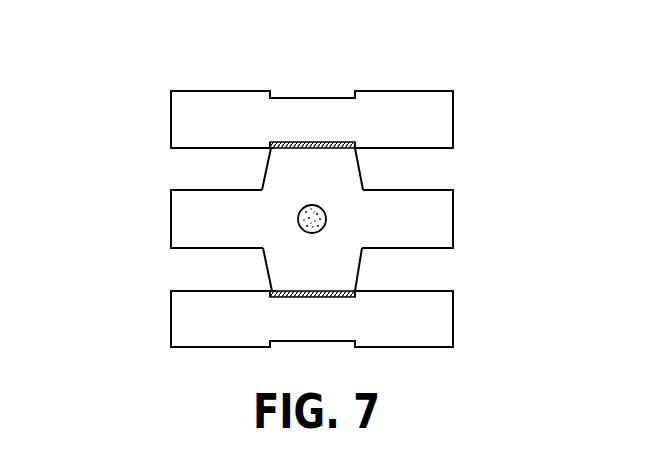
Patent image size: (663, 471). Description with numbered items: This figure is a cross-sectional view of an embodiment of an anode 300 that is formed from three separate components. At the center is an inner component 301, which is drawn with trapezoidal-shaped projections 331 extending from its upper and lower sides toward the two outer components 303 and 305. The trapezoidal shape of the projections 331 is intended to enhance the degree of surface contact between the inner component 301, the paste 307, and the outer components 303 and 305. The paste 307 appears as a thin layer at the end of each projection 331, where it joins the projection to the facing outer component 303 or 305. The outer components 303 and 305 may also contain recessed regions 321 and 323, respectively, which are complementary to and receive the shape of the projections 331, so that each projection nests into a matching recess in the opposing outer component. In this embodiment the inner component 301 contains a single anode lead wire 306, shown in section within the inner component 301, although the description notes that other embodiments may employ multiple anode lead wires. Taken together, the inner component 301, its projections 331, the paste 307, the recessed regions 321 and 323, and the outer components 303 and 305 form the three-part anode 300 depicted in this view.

The anode 300 is at (104, 164).
The inner component 301 is at (450, 217).
The outer component 303 is at (450, 118).
The outer component 305 is at (450, 313).
The anode lead wire 306 is at (312, 233).
The paste 307 is at (310, 142).
The recessed region 321 is at (258, 158).
The recessed region 323 is at (272, 290).
The trapezoidal-shaped projection 331 is at (360, 174).